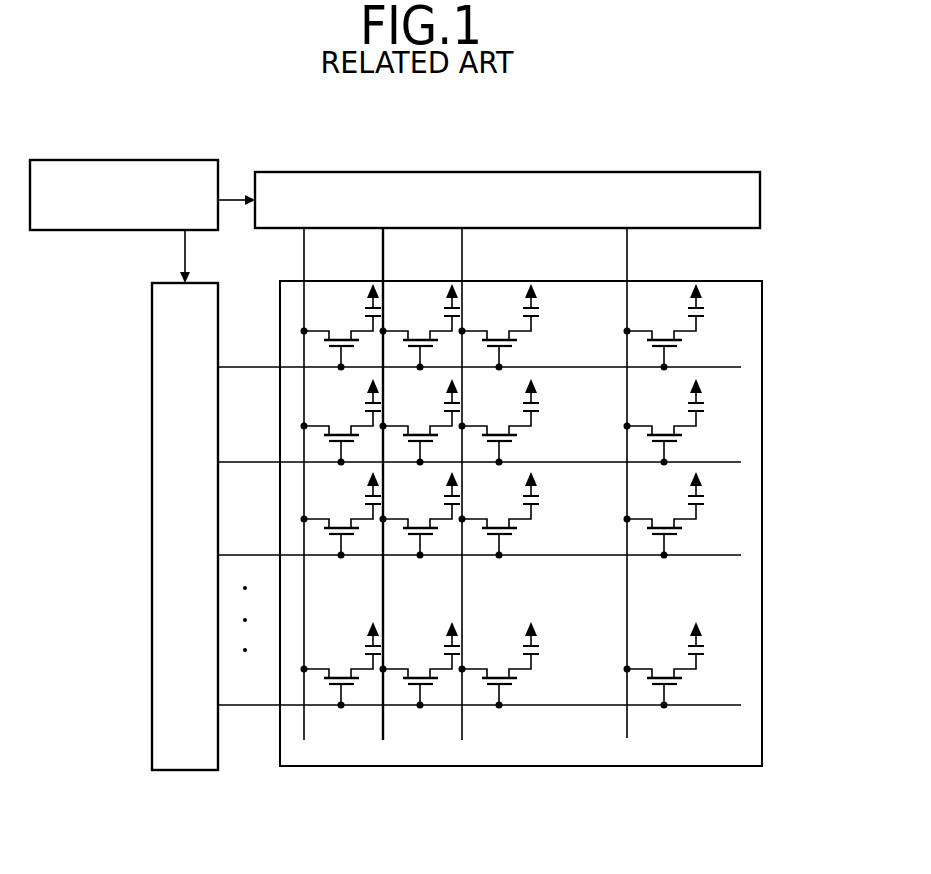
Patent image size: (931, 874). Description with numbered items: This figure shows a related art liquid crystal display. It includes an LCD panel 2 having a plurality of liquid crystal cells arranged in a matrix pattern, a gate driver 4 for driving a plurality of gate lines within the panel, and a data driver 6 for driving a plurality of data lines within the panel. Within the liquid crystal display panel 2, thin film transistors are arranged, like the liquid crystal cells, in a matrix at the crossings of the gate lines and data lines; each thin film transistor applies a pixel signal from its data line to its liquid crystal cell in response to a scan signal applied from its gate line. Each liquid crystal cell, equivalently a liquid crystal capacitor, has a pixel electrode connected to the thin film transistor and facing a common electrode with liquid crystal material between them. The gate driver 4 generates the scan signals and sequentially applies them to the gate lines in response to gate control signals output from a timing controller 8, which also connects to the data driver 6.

The timing controller 8 is at (188, 160).
The data driver 6 is at (658, 172).
The gate driver 4 is at (183, 771).
The LCD panel 2 is at (764, 297).